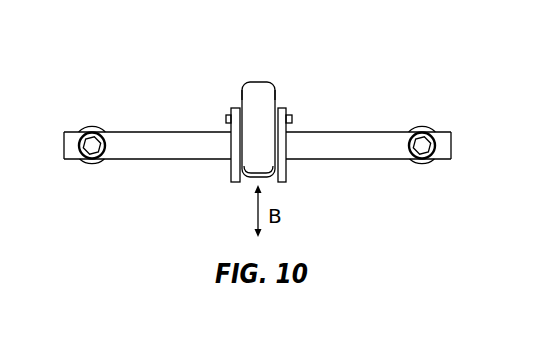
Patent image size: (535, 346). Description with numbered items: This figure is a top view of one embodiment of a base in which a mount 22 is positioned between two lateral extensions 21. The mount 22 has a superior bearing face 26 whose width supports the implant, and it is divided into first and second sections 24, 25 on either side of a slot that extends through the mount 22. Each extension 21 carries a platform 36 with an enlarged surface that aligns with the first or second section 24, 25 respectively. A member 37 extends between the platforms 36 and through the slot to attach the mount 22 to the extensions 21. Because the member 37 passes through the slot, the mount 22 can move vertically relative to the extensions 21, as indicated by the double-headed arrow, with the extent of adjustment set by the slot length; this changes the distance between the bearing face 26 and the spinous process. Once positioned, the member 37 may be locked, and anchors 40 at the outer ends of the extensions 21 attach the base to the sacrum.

The extensions 21 is at (165, 150).
The mount 22 is at (252, 66).
The first section 24 is at (278, 96).
The second section 25 is at (243, 96).
The superior bearing face 26 is at (262, 82).
The platform 36 is at (290, 126).
The member 37 is at (225, 120).
The anchors 40 is at (102, 121).